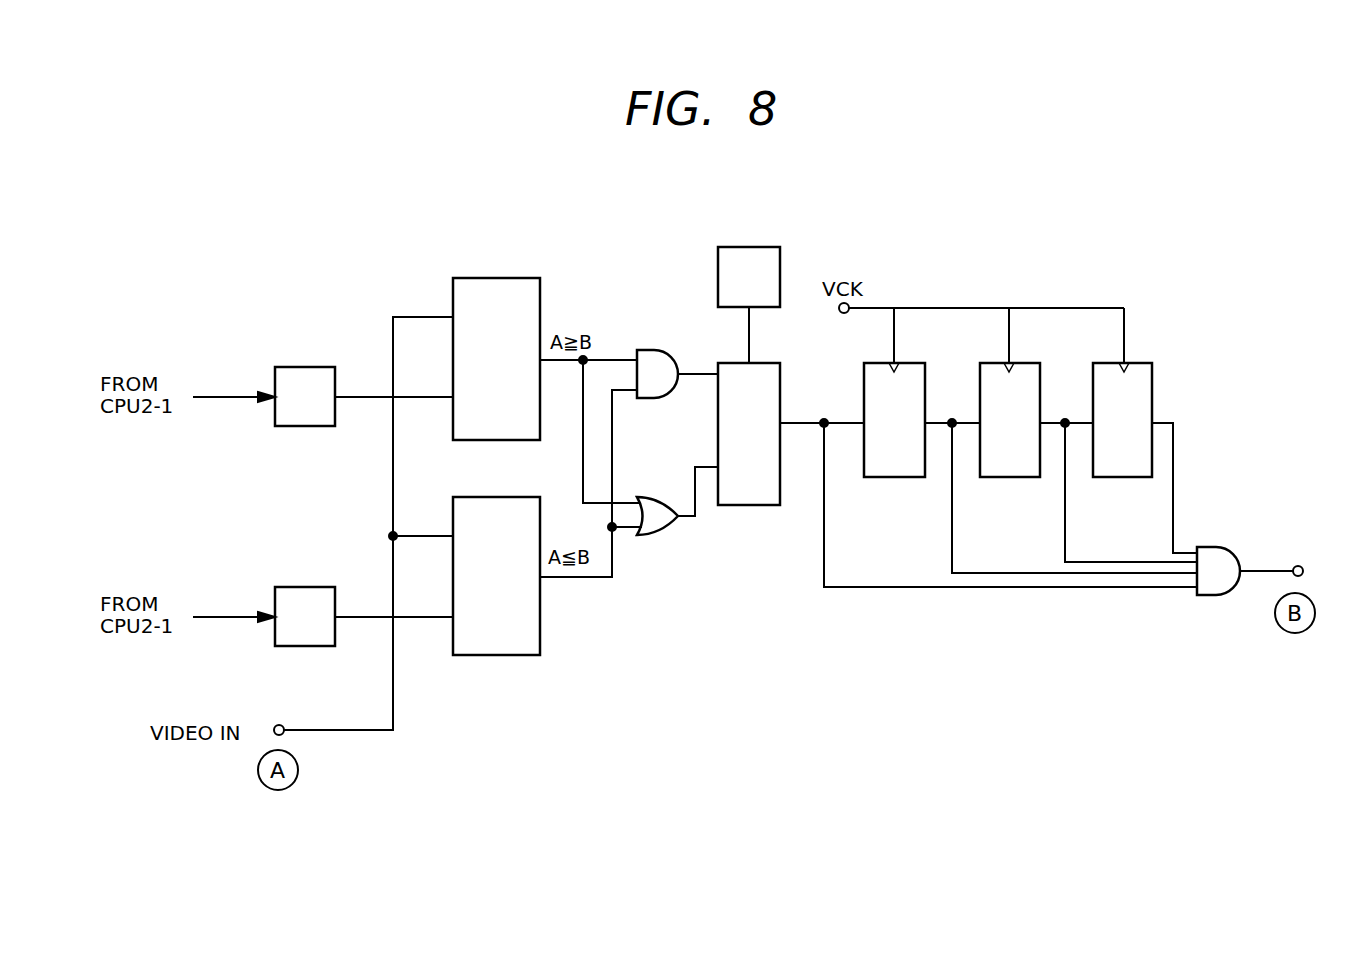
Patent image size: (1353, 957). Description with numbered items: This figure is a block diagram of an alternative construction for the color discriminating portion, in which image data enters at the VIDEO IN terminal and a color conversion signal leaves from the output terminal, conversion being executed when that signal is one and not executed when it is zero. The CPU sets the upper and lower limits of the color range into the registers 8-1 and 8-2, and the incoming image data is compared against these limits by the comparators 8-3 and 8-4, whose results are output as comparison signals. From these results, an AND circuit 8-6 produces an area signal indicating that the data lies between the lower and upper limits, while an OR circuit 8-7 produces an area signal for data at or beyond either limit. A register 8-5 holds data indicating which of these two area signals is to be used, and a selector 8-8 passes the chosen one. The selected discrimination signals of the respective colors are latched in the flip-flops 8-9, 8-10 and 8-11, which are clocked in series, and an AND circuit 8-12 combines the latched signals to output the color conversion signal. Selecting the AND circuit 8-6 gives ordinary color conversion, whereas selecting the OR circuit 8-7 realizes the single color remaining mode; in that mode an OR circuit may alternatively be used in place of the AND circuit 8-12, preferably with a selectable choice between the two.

The register 8-1 is at (318, 367).
The register 8-2 is at (318, 587).
The comparator 8-3 is at (516, 278).
The comparator 8-4 is at (516, 497).
The register 8-5 is at (761, 247).
The AND circuit 8-6 is at (660, 350).
The OR circuit 8-7 is at (660, 497).
The selector 8-8 is at (758, 505).
The flip-flop (D-FF) 8-9 is at (898, 477).
The flip-flop (D-FF) 8-10 is at (1014, 477).
The flip-flop (D-FF) 8-11 is at (1130, 477).
The AND circuit 8-12 is at (1222, 547).